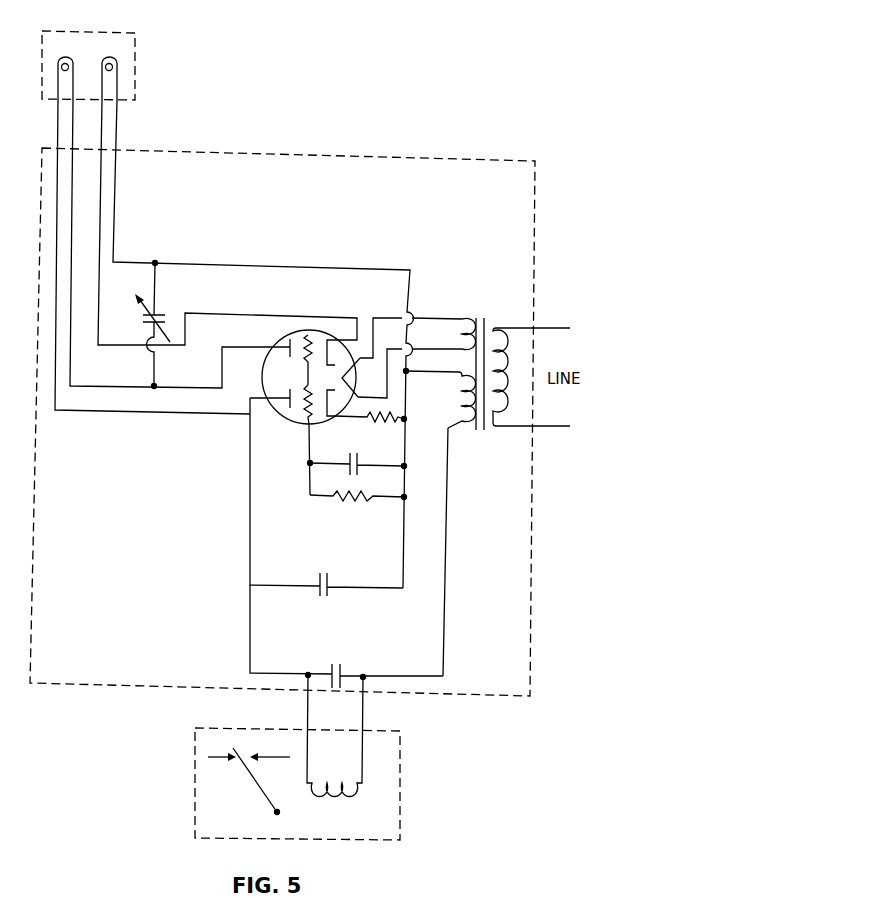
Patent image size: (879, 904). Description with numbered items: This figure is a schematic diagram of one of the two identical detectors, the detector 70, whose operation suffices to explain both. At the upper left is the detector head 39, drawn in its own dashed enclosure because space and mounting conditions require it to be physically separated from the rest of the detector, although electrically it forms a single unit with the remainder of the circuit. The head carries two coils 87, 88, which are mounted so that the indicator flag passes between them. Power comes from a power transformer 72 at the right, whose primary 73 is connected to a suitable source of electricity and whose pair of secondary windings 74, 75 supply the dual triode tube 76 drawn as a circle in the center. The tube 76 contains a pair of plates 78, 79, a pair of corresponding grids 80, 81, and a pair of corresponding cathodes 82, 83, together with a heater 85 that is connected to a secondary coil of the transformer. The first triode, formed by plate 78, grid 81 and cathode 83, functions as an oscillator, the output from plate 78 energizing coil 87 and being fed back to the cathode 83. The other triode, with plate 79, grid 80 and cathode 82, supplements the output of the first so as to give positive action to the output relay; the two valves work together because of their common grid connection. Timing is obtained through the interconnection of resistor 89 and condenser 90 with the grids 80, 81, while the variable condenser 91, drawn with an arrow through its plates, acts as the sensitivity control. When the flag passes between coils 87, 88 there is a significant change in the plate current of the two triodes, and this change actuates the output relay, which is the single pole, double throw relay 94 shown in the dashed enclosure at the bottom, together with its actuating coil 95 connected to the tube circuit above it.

The detector head 39 is at (135, 49).
The detector 70 is at (345, 150).
The power transformer 72 is at (482, 316).
The primary 73 is at (506, 345).
The secondary winding 74 is at (451, 428).
The secondary winding 75 is at (458, 329).
The dual triode tube 76 is at (262, 370).
The plate 78 is at (287, 409).
The plate 79 is at (288, 341).
The grid 80 is at (306, 415).
The grid 81 is at (306, 334).
The cathode 82 is at (337, 418).
The cathode 83 is at (333, 346).
The heater 85 is at (361, 350).
The coil 87 is at (69, 60).
The coil 88 is at (112, 60).
The resistor 89 is at (358, 500).
The condenser 90 is at (362, 472).
The variable condenser 91 is at (160, 313).
The single pole, double throw relay 94 is at (404, 836).
The actuating coil 95 is at (318, 793).